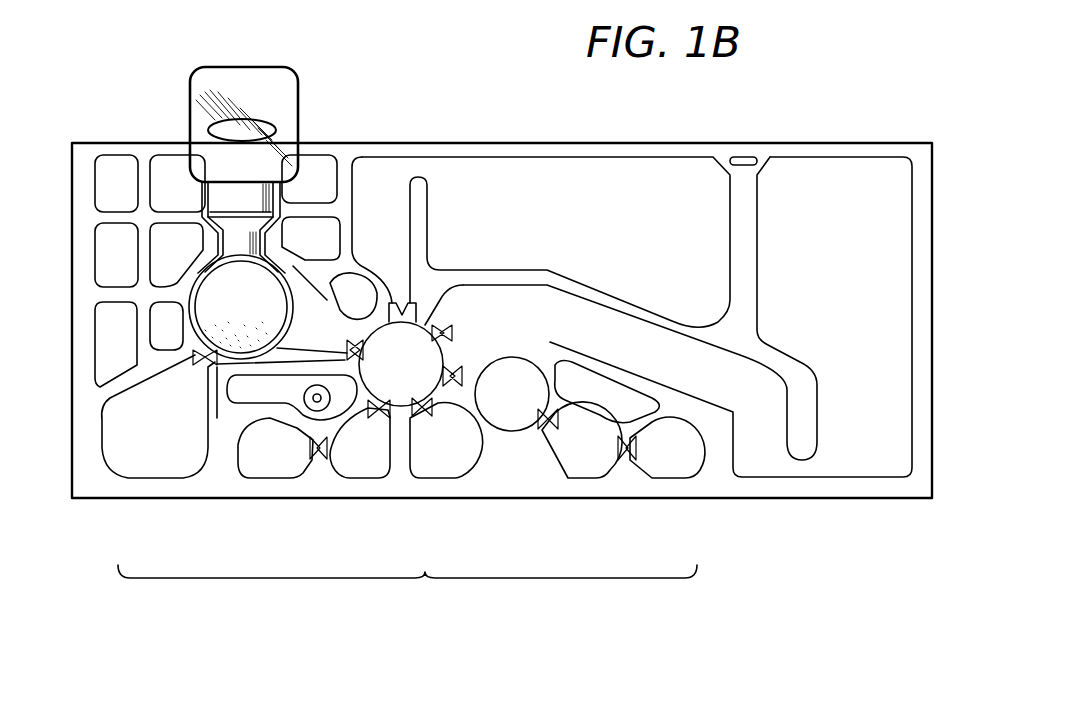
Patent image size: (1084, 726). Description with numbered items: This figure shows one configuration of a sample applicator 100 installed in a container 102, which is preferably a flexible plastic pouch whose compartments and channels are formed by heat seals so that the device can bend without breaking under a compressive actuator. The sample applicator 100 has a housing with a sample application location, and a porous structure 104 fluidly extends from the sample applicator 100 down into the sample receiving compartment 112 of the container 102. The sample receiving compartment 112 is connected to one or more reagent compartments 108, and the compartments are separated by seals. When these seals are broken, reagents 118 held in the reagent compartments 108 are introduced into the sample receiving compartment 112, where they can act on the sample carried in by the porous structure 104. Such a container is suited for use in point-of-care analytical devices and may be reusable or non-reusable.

The sample applicator 100 is at (257, 77).
The container 102 is at (778, 123).
The porous structure 104 is at (204, 282).
The reagent compartments 108 is at (425, 580).
The sample receiving compartment 112 is at (318, 325).
The reagents 118 is at (172, 468).